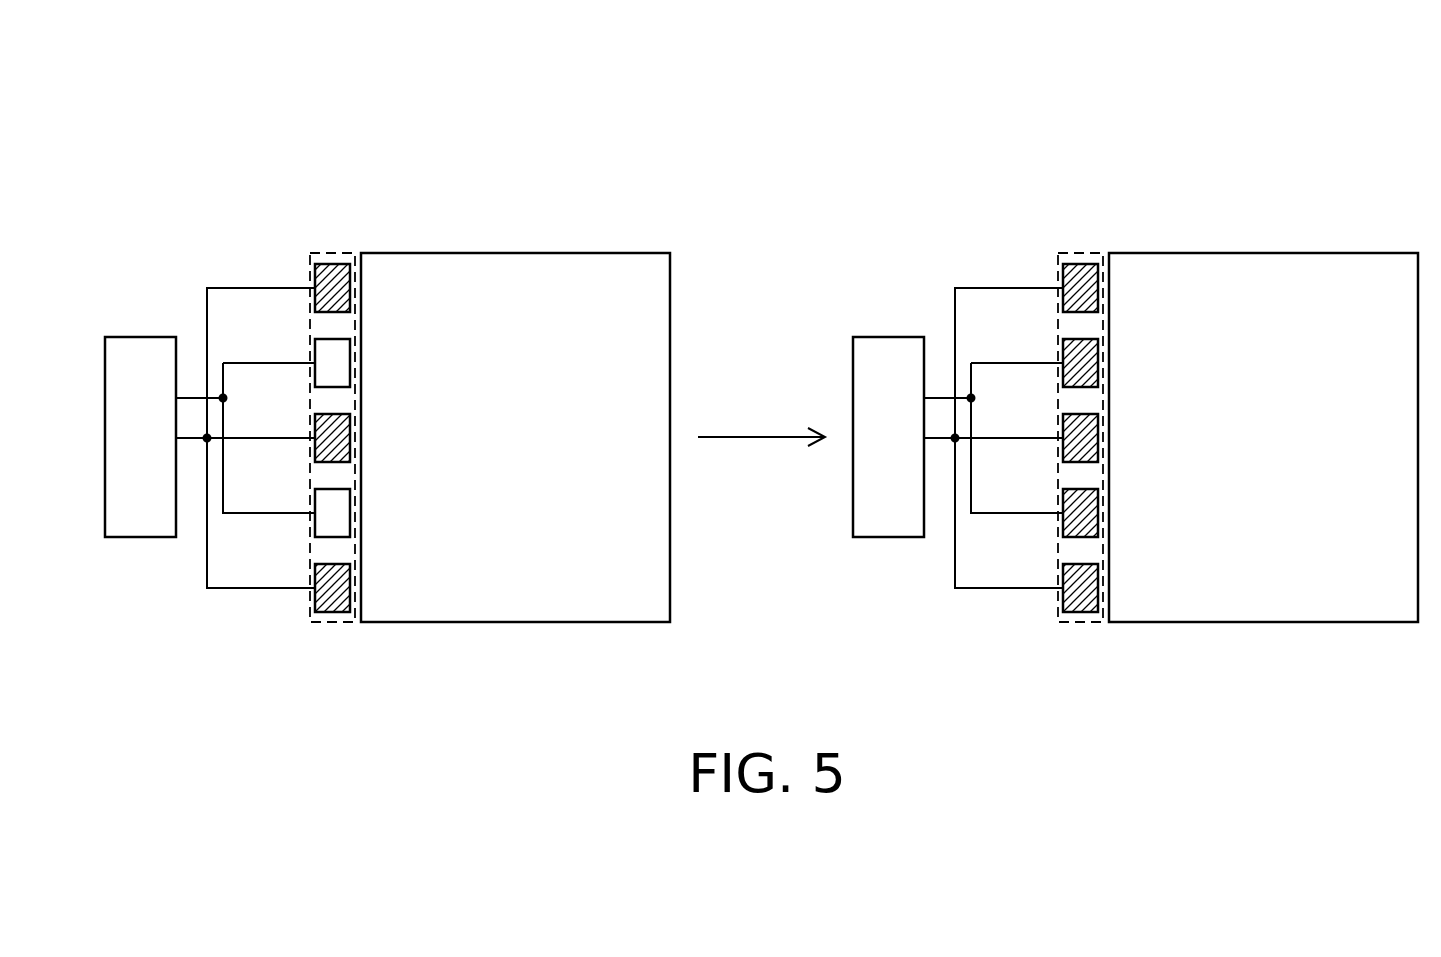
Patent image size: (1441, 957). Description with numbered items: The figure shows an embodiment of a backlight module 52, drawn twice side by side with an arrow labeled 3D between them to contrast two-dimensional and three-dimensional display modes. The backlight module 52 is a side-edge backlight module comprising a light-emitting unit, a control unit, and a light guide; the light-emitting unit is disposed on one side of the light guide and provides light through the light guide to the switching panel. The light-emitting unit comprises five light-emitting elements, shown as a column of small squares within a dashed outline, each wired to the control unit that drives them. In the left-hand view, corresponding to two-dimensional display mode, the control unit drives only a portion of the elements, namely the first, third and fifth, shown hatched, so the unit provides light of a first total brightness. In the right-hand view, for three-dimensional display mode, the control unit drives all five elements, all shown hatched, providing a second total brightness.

The backlight module 52 is at (227, 77).